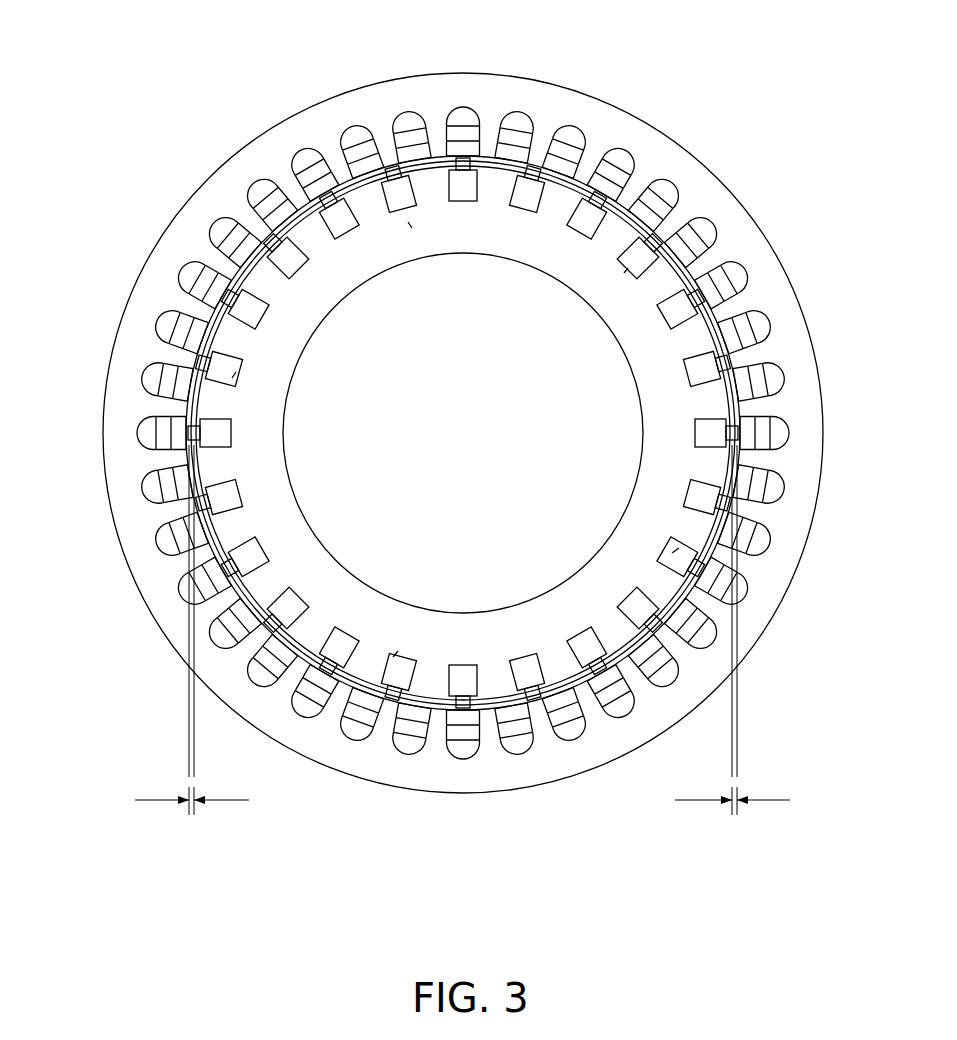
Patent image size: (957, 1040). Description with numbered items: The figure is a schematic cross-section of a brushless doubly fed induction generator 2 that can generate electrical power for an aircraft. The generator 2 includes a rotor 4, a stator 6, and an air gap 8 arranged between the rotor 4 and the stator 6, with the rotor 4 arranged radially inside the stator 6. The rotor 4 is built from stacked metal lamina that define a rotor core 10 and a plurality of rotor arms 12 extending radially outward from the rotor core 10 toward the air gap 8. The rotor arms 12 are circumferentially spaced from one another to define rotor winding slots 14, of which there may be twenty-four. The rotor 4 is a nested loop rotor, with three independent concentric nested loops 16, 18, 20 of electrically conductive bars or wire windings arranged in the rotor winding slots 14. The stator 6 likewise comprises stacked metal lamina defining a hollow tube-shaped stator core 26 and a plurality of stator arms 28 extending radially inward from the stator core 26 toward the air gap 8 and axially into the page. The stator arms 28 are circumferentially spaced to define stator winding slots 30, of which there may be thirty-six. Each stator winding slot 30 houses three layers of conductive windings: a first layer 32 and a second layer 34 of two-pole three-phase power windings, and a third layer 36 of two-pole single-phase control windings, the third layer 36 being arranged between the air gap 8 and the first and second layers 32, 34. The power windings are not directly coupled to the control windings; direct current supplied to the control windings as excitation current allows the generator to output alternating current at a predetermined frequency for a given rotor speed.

The brushless doubly fed induction generator 2 is at (124, 139).
The rotor 4 is at (546, 296).
The stator 6 is at (640, 108).
The air gap 8 is at (157, 800).
The rotor core 10 is at (305, 308).
The rotor arms 12 is at (308, 237).
The rotor winding slots 14 is at (412, 228).
The first nested loop 16 is at (258, 552).
The second nested loop 18 is at (223, 434).
The third nested loop 20 is at (232, 378).
The stator core 26 is at (162, 262).
The stator arms 28 is at (750, 353).
The stator winding slots 30 is at (463, 108).
The first layer of power windings 32 is at (262, 186).
The second layer of power windings 34 is at (282, 182).
The third layer of control windings 36 is at (265, 218).